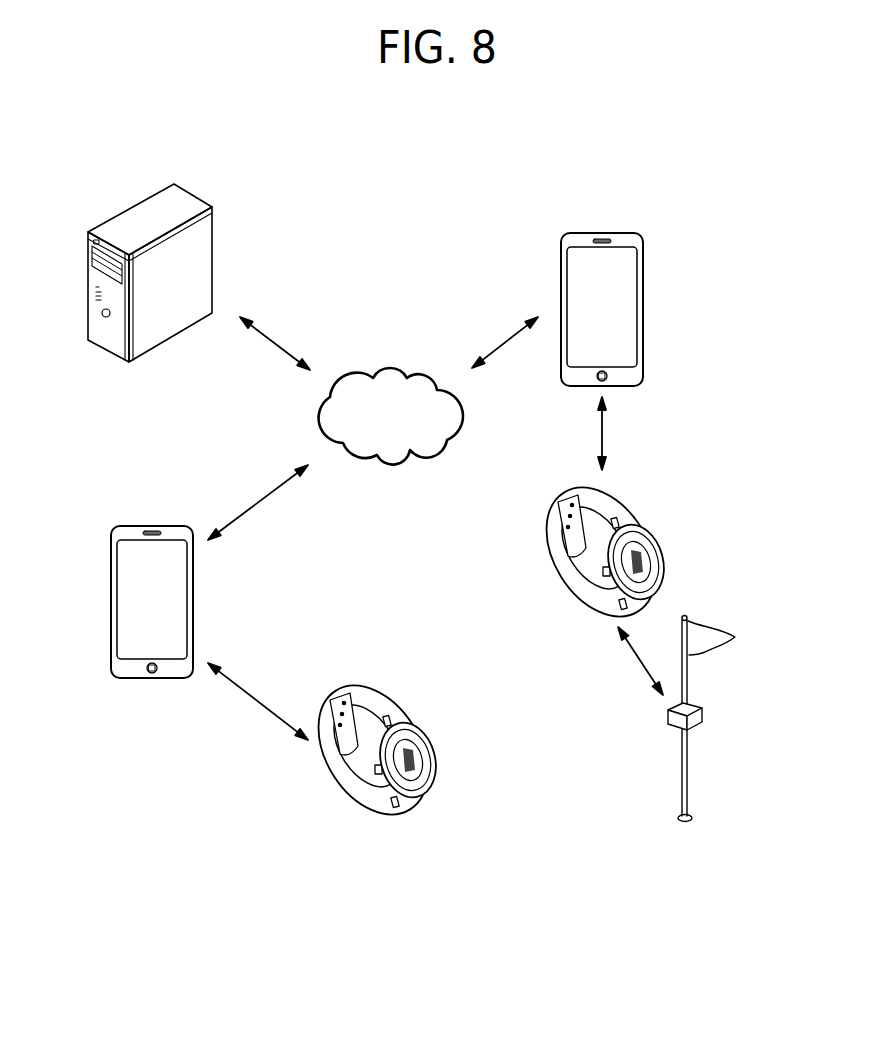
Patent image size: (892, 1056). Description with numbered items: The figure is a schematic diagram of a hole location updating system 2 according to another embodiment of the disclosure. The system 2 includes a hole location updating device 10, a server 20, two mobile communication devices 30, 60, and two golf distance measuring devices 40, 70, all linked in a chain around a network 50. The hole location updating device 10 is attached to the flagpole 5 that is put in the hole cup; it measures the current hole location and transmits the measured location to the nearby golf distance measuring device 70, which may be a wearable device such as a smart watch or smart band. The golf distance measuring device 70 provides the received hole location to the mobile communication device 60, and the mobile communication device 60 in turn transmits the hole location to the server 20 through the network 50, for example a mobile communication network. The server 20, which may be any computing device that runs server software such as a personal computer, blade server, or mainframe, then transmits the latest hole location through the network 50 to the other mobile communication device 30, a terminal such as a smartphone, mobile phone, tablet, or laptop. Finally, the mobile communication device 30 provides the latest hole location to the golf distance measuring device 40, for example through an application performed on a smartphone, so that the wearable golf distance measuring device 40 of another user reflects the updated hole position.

The hole location updating system 2 is at (405, 179).
The flagpole 5 is at (688, 754).
The hole location updating device 10 is at (702, 718).
The server 20 is at (138, 212).
The mobile communication device 30 is at (152, 679).
The golf distance measuring device 40 is at (362, 796).
The network 50 is at (391, 368).
The mobile communication device 60 is at (600, 233).
The golf distance measuring device 70 is at (590, 598).